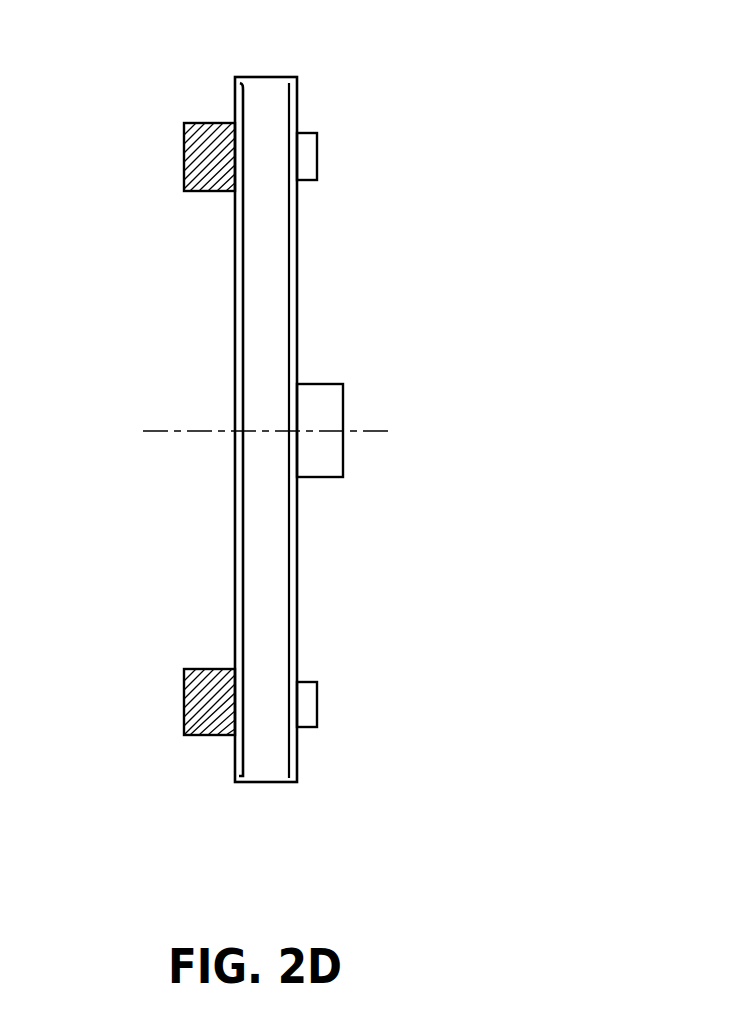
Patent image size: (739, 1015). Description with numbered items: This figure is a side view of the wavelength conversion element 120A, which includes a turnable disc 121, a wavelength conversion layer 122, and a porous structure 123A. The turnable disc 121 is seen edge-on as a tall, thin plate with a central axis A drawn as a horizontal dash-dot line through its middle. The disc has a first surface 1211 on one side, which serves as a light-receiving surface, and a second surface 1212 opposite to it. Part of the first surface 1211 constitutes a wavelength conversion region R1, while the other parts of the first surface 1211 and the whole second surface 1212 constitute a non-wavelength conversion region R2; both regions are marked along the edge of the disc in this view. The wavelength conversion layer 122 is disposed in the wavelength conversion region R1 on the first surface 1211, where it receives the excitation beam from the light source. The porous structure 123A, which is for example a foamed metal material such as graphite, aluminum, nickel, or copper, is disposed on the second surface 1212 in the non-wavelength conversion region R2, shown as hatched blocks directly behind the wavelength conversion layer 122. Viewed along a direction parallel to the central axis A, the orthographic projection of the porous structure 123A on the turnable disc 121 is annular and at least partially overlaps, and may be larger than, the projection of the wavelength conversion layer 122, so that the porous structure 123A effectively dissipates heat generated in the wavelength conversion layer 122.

The wavelength conversion element 120A is at (495, 862).
The turnable disc 121 is at (257, 773).
The second surface 1212 is at (222, 96).
The first surface 1211 is at (308, 96).
The wavelength conversion layer 122 is at (310, 155).
The porous structure 123A is at (202, 155).
The wavelength conversion region R1 is at (292, 130).
The non-wavelength conversion region R2 is at (292, 83).
The central axis A is at (282, 429).